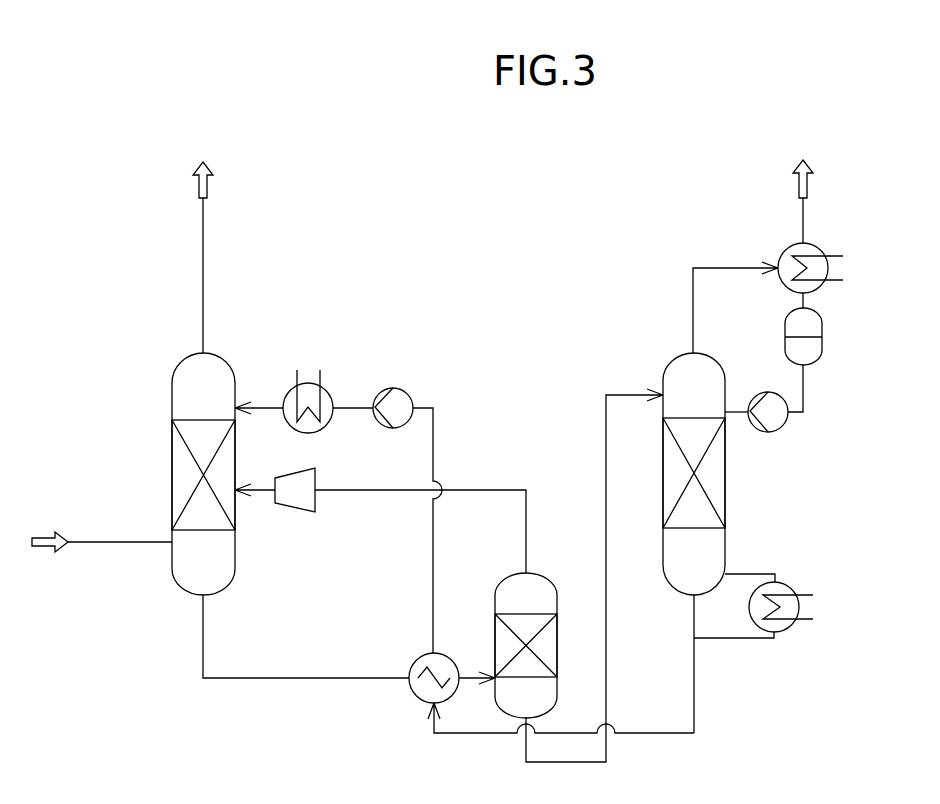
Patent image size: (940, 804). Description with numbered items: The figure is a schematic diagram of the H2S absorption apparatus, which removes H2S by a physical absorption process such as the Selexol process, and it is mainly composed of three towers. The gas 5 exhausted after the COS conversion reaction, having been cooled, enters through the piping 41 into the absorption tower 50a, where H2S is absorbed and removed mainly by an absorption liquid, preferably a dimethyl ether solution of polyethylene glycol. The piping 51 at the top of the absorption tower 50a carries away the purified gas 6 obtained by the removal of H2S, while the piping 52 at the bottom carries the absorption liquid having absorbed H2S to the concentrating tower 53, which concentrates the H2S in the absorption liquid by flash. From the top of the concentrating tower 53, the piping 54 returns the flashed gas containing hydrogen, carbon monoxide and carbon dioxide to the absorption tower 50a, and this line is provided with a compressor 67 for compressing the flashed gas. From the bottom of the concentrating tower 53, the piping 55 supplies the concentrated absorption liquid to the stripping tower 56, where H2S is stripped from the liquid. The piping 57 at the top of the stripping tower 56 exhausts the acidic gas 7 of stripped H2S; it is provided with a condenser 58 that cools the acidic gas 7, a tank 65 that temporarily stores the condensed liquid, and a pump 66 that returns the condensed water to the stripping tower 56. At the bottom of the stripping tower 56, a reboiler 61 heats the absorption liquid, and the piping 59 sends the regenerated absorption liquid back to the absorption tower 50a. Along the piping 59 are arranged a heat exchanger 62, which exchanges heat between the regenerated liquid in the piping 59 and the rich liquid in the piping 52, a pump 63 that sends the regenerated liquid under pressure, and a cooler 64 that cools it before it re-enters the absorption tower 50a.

The gas 5 is at (50, 525).
The purified gas 6 is at (217, 184).
The acidic gas 7 is at (816, 201).
The piping 41 is at (112, 545).
The absorption tower 50a is at (172, 400).
The piping 51 is at (203, 264).
The piping 52 is at (285, 680).
The concentrating tower 53 is at (495, 607).
The piping 54 is at (488, 490).
The piping 55 is at (604, 483).
The stripping tower 56 is at (725, 492).
The piping 57 is at (693, 310).
The condenser 58 is at (820, 251).
The piping 59 is at (694, 705).
The reboiler 61 is at (790, 585).
The heat exchanger 62 is at (410, 690).
The pump 63 is at (398, 390).
The cooler 64 is at (290, 390).
The tank 65 is at (822, 330).
The pump 66 is at (790, 422).
The compressor 67 is at (290, 512).